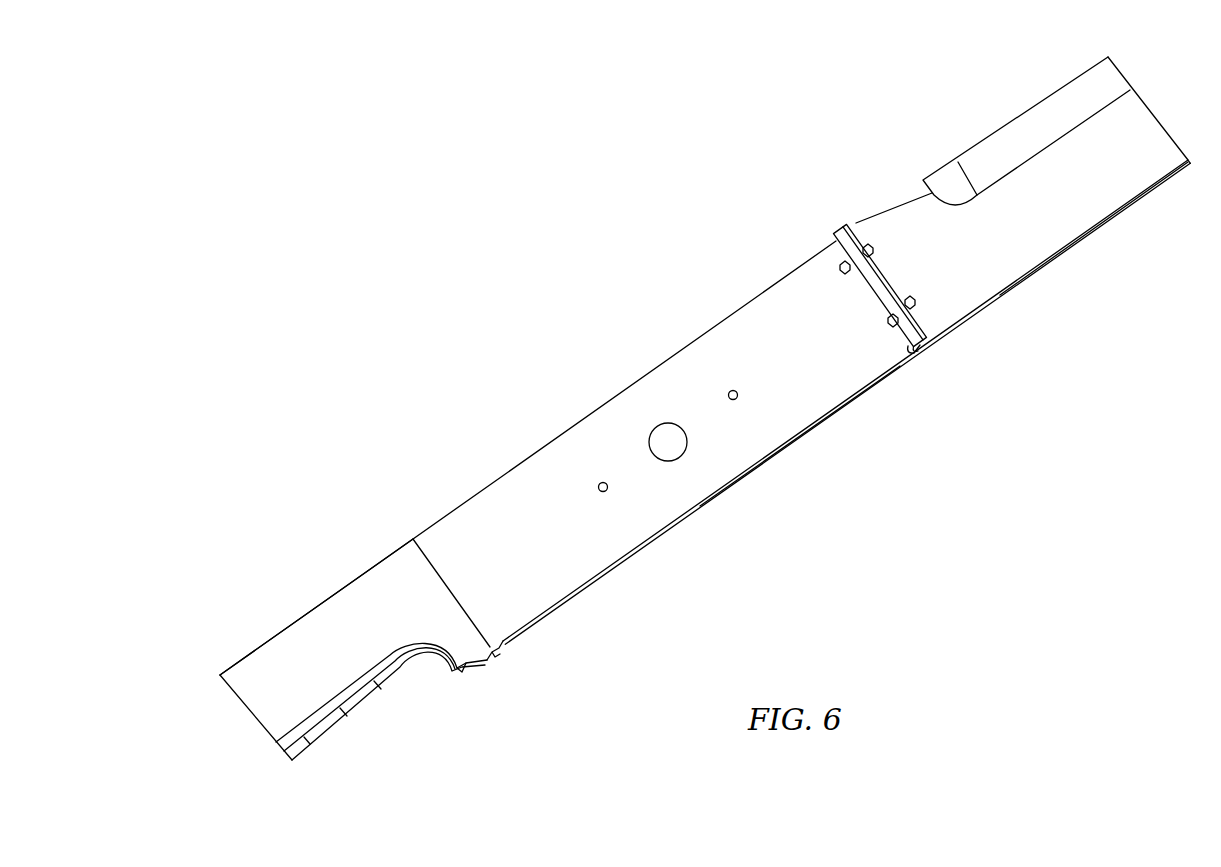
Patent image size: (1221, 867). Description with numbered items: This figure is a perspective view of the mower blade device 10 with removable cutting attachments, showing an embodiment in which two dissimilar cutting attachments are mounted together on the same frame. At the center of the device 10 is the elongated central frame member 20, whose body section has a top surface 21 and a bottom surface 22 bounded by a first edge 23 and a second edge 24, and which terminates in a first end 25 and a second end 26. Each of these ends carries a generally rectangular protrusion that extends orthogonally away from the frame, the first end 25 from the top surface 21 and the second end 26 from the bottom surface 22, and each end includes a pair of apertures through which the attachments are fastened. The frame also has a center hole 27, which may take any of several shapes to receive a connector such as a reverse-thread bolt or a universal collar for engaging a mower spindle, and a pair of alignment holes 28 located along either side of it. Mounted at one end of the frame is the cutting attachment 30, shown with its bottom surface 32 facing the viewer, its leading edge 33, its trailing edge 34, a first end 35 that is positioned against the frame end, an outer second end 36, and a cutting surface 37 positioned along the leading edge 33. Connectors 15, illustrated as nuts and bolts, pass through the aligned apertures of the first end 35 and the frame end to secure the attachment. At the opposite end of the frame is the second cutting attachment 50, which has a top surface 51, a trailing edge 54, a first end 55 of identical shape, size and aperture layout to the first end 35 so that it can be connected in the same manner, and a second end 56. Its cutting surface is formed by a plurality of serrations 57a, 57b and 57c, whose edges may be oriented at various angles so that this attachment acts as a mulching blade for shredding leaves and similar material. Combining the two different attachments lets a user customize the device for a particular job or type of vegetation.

The device 10 is at (482, 353).
The connectors 15 is at (848, 270).
The central frame member 20 is at (658, 332).
The top surface 21 is at (672, 396).
The bottom surface 22 is at (694, 507).
The first edge 23 is at (824, 424).
The second edge 24 is at (722, 320).
The first end 25 is at (912, 350).
The second end 26 is at (507, 652).
The center hole 27 is at (660, 443).
The alignment holes 28 is at (742, 396).
The cutting attachment 30 is at (958, 92).
The bottom surface 32 is at (1034, 207).
The leading edge 33 is at (862, 221).
The trailing edge 34 is at (1086, 237).
The first end 35 is at (933, 332).
The second end 36 is at (1152, 112).
The cutting surface 37 is at (1010, 122).
The cutting attachment 50 is at (302, 577).
The top surface 51 is at (355, 621).
The trailing edge 54 is at (355, 580).
The first end 55 is at (488, 664).
The second end 56 is at (243, 714).
The serration 57a is at (312, 748).
The serration 57b is at (360, 702).
The serration 57c is at (405, 662).